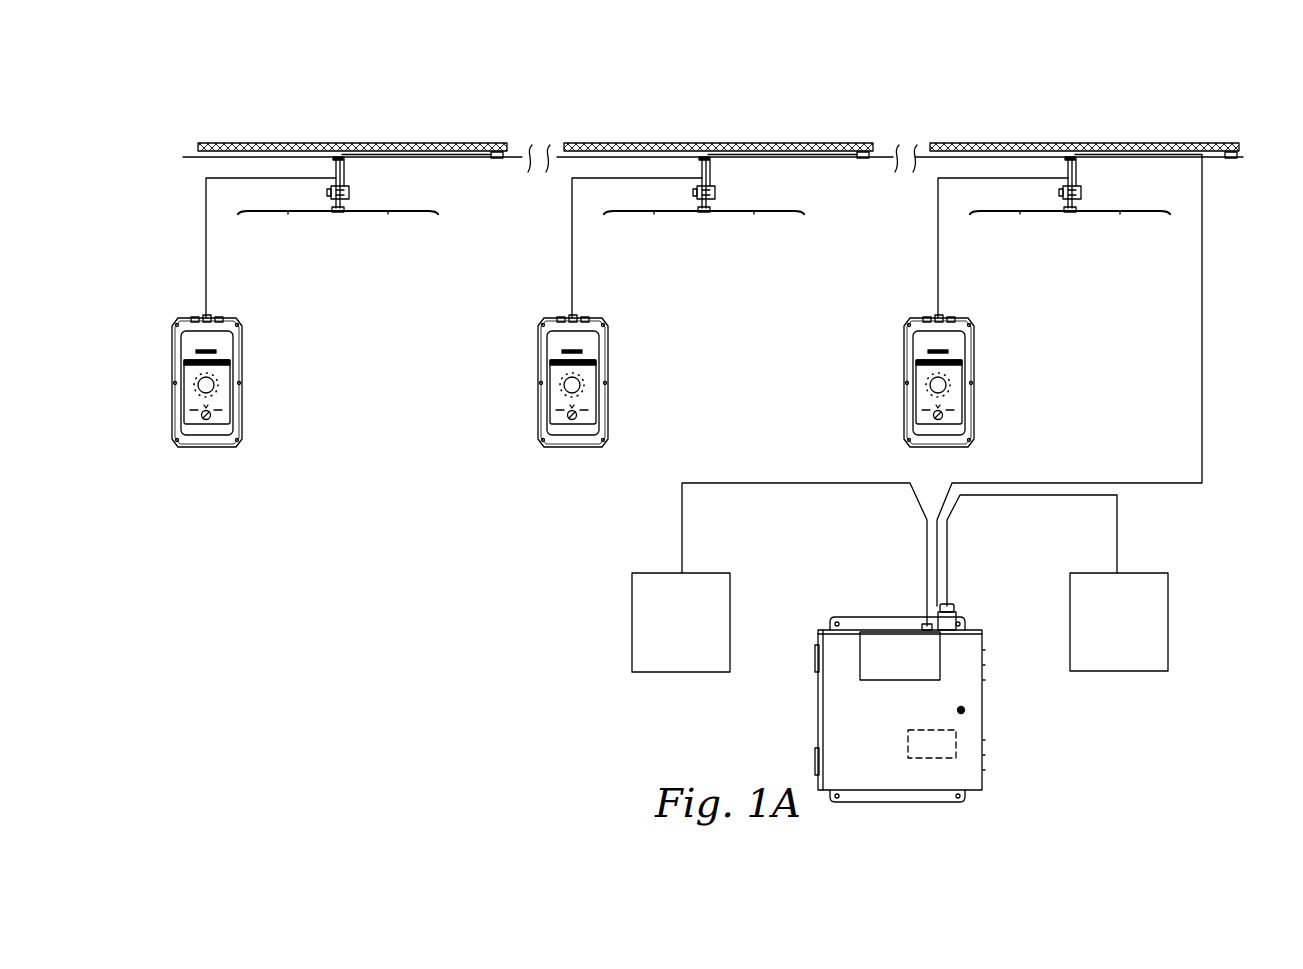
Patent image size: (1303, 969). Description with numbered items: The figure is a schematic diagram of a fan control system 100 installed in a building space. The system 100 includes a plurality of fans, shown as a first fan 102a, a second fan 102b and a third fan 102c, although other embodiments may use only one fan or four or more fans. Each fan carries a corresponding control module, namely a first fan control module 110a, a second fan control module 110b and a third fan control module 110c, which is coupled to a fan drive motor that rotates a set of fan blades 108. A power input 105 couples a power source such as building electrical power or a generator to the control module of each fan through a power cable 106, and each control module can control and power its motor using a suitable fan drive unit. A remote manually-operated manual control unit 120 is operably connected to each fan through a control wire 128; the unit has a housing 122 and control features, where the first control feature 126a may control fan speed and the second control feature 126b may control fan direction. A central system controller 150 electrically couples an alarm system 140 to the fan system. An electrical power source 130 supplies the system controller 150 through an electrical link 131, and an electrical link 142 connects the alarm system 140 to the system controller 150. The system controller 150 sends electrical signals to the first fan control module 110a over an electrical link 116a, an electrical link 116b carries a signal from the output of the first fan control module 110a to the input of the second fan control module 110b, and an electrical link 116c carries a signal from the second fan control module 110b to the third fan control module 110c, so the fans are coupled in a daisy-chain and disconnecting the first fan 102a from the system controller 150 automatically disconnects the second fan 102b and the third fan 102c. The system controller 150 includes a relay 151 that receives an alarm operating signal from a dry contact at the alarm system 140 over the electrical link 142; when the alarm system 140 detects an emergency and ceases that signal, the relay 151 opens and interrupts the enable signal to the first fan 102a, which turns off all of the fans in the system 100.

The fan control system 100 is at (230, 110).
The first fan 102a is at (1033, 112).
The second fan 102b is at (665, 112).
The third fan 102c is at (300, 112).
The power input 105 is at (497, 160).
The power cable 106 is at (449, 150).
The fan blades 108 is at (345, 216).
The first fan control module 110a is at (1083, 195).
The second fan control module 110b is at (717, 195).
The third fan control module 110c is at (351, 195).
The electrical link 116a is at (1200, 393).
The electrical link 116b is at (837, 160).
The electrical link 116c is at (470, 160).
The manual control unit 120 is at (623, 377).
The housing 122 is at (237, 342).
The first control feature 126a is at (215, 383).
The second control feature 126b is at (212, 418).
The control wire 128 is at (207, 272).
The electrical power source 130 is at (1170, 625).
The electrical link 131 is at (1118, 540).
The alarm system 140 is at (732, 622).
The electrical link 142 is at (762, 483).
The system controller 150 is at (871, 703).
The relay 151 is at (957, 745).